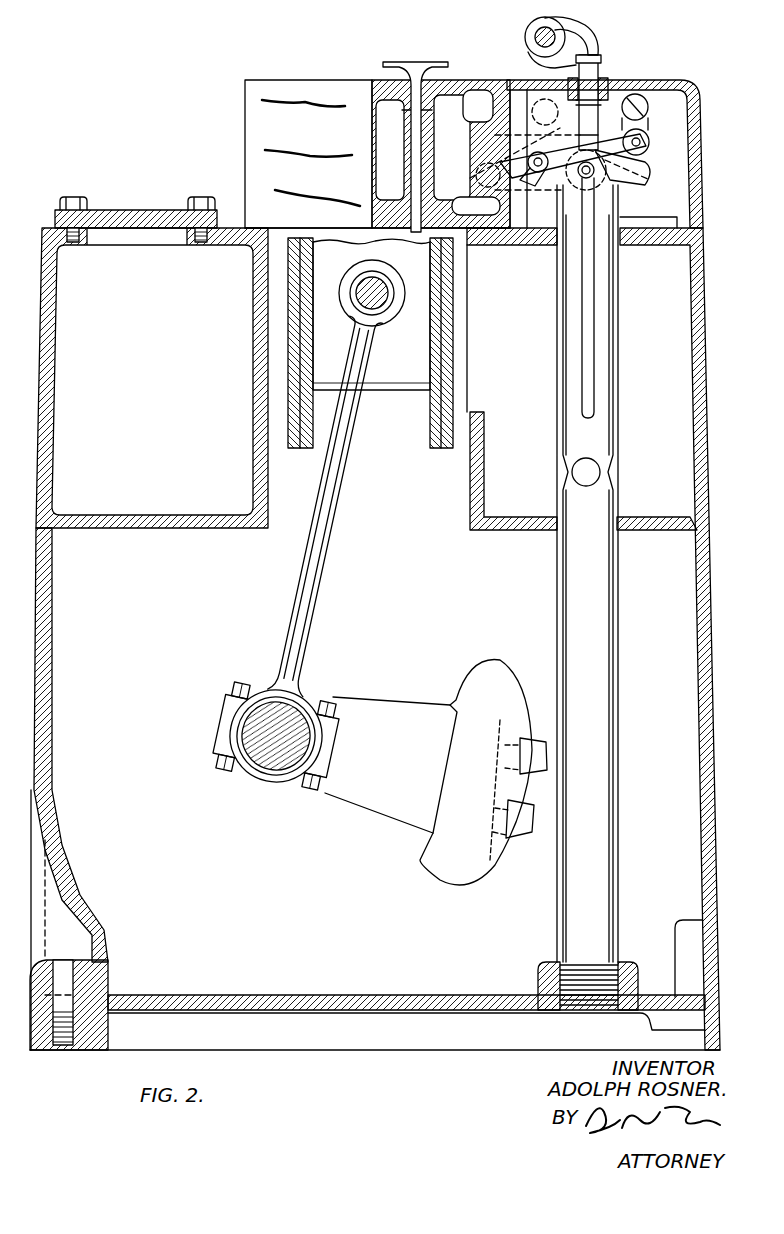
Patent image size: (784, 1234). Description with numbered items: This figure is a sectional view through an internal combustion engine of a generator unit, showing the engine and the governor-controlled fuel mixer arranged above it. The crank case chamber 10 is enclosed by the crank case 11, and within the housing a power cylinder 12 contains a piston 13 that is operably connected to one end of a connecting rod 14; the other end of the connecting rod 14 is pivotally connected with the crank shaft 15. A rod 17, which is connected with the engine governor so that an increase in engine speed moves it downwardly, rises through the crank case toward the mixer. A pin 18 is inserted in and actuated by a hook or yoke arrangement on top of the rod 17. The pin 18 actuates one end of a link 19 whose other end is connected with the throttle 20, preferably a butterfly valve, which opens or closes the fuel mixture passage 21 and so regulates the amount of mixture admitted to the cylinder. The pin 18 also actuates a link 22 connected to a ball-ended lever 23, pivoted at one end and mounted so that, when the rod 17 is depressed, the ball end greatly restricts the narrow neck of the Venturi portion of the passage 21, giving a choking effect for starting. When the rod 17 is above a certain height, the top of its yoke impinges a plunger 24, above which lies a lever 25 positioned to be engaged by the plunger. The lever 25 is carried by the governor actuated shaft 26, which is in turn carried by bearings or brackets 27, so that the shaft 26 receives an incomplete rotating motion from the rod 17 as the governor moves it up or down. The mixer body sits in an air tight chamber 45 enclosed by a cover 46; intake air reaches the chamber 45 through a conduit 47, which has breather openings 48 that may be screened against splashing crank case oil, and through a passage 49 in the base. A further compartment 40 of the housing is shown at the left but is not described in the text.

The crank case chamber 10 is at (471, 566).
The crank case 11 is at (58, 600).
The power cylinder 12 is at (448, 448).
The piston 13 is at (436, 330).
The connecting rod 14 is at (355, 513).
The crank shaft 15 is at (250, 772).
The rod 17 is at (594, 312).
The pin 18 is at (580, 180).
The link 19 is at (545, 112).
The throttle 20 is at (512, 169).
The fuel mixture passage 21 is at (558, 159).
The link 22 is at (617, 168).
The ball-ended lever 23 is at (641, 135).
The plunger 24 is at (590, 78).
The lever 25 is at (580, 38).
The governor actuated shaft 26 is at (526, 42).
The bearings or brackets 27 is at (530, 64).
The compartment 40 is at (152, 362).
The air tight chamber 45 is at (690, 190).
The cover 46 is at (700, 160).
The conduit 47 is at (588, 597).
The breather openings 48 is at (600, 462).
The passage 49 is at (406, 982).